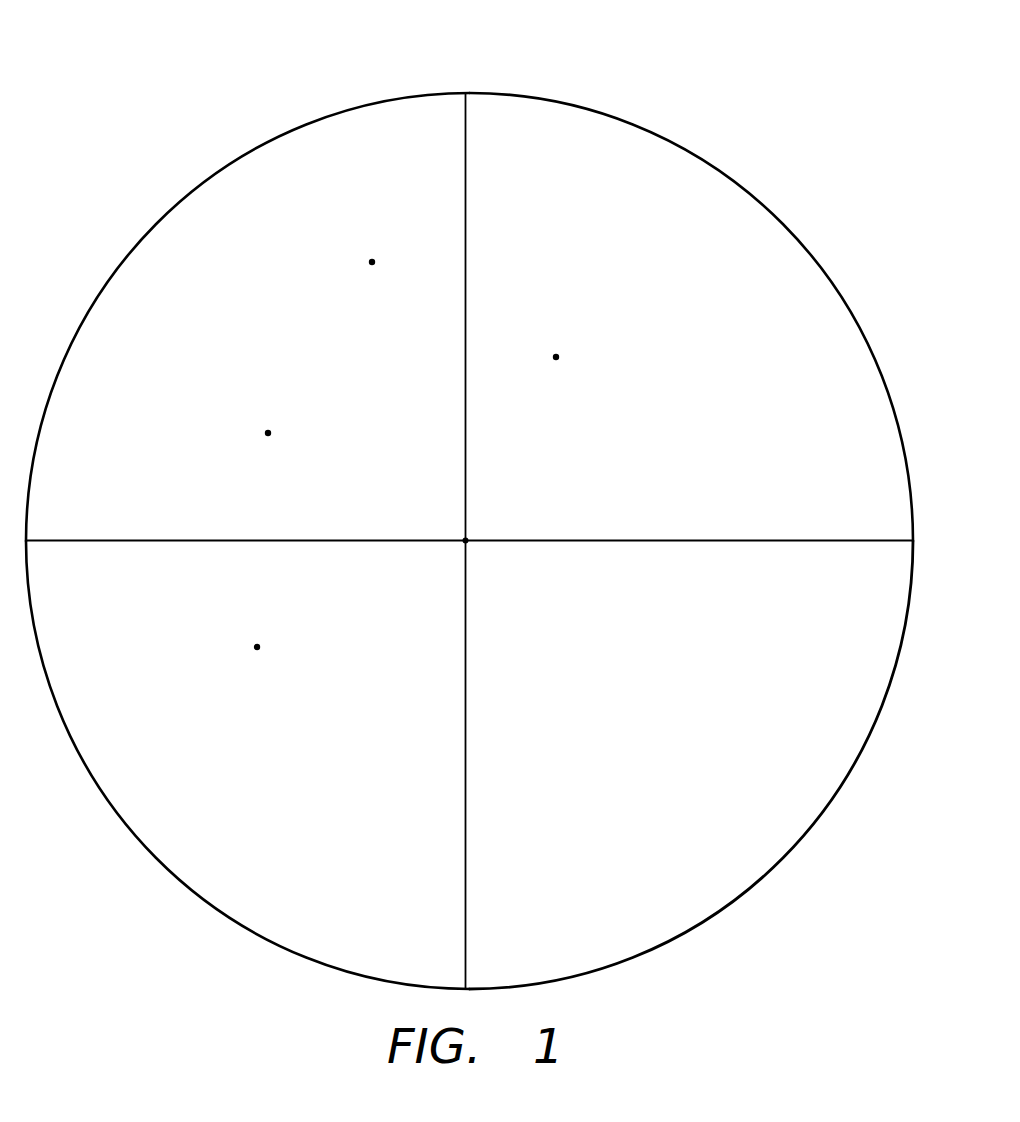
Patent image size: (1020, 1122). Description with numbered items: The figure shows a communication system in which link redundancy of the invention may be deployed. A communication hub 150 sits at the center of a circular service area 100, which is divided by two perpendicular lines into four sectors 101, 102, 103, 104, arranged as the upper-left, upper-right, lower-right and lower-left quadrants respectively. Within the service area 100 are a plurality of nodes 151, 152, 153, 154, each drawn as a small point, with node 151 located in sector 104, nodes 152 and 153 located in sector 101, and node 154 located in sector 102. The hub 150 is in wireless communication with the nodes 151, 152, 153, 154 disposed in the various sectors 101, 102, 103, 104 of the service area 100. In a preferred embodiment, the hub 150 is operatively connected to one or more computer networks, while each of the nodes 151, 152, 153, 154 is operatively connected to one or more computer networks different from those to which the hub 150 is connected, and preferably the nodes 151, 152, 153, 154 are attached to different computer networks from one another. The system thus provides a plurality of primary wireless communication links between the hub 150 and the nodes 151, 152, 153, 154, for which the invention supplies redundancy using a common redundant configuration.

The service area 100 is at (469, 504).
The sector 101 is at (160, 228).
The sector 102 is at (770, 228).
The sector 103 is at (770, 855).
The sector 104 is at (162, 855).
The communication hub 150 is at (472, 547).
The node 151 is at (245, 647).
The node 152 is at (257, 433).
The node 153 is at (362, 263).
The node 154 is at (568, 357).